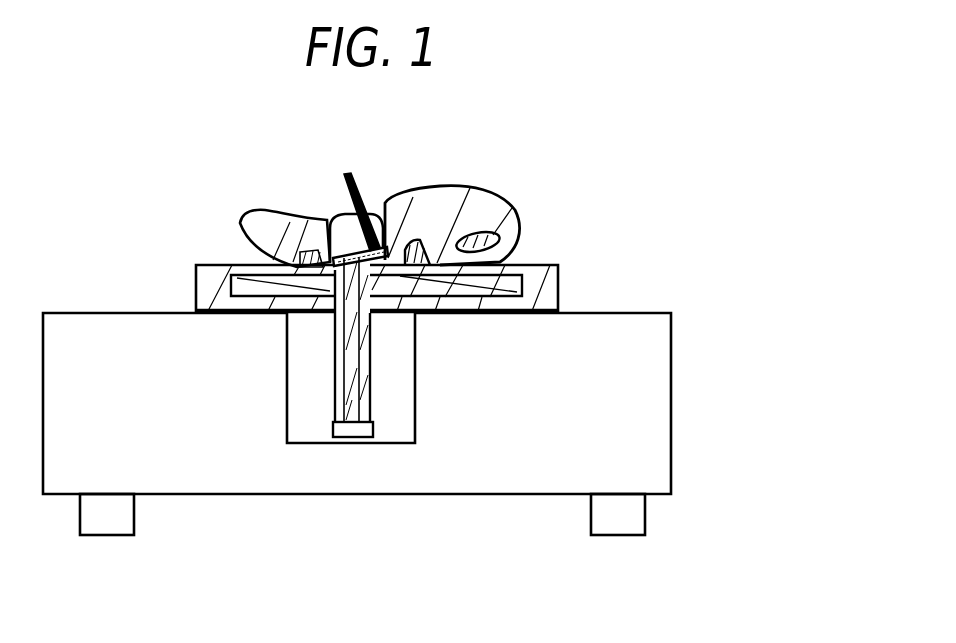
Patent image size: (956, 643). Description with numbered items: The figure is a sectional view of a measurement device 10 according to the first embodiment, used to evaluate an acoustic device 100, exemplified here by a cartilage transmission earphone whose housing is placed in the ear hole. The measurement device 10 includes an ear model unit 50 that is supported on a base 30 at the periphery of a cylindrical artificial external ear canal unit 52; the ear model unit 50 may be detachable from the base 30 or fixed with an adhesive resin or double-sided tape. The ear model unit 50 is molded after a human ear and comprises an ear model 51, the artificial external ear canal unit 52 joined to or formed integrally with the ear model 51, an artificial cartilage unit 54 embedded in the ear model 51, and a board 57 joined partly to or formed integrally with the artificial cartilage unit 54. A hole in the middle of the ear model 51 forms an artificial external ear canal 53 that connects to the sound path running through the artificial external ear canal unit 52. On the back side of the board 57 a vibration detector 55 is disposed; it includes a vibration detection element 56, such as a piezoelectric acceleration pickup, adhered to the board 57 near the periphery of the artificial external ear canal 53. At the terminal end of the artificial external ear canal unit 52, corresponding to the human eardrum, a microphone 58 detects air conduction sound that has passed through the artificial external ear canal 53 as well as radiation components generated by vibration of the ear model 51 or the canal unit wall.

The measurement device 10 is at (375, 602).
The base 30 is at (525, 494).
The ear model unit 50 is at (196, 266).
The ear model 51 is at (487, 205).
The artificial external ear canal unit 52 is at (342, 397).
The artificial external ear canal 53 is at (352, 392).
The artificial cartilage unit 54 is at (300, 255).
The vibration detector 55 is at (394, 317).
The vibration detection element 56 is at (250, 307).
The board 57 is at (245, 270).
The microphone 58 is at (352, 433).
The acoustic device 100 is at (343, 233).